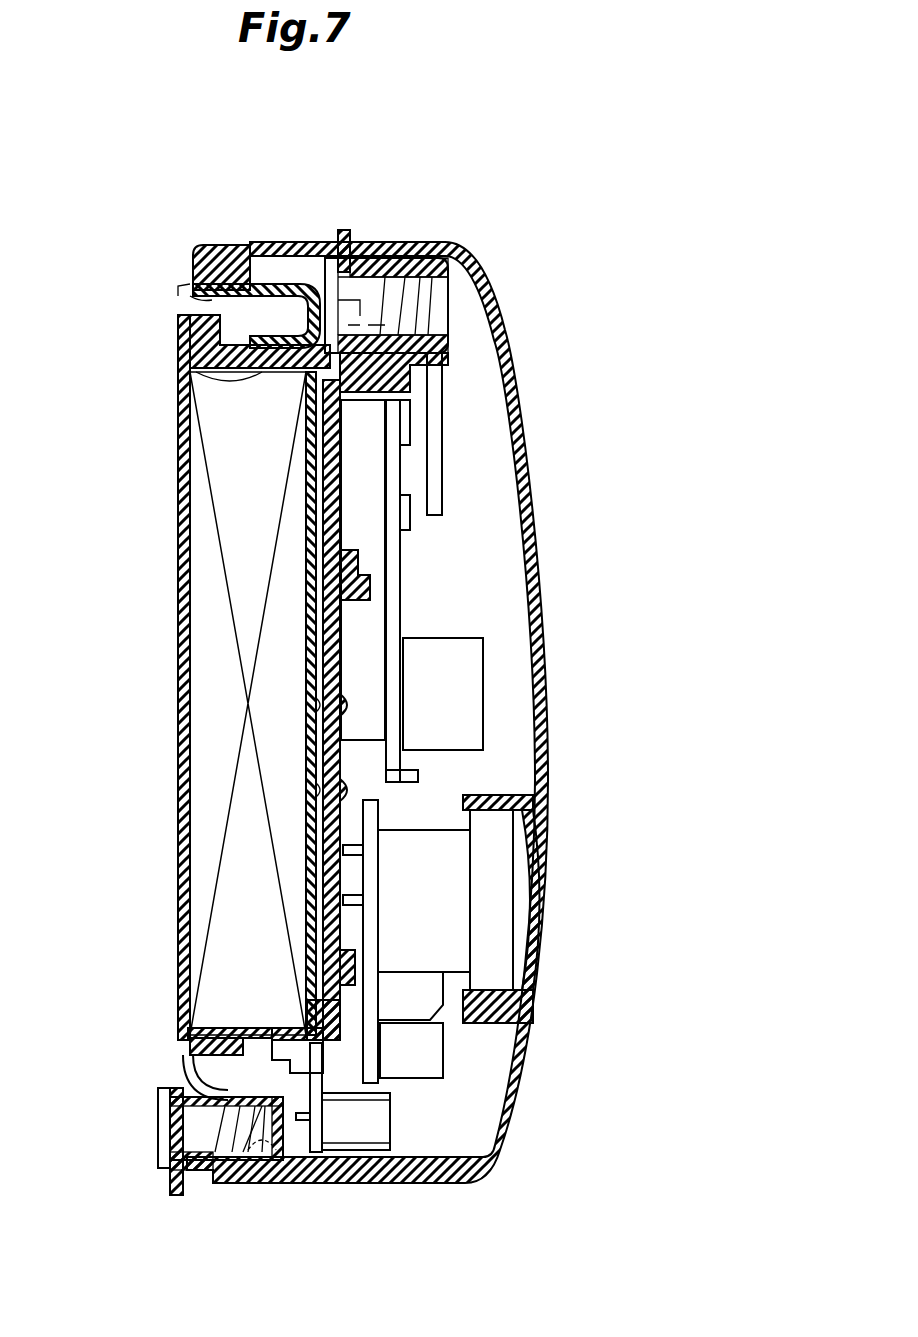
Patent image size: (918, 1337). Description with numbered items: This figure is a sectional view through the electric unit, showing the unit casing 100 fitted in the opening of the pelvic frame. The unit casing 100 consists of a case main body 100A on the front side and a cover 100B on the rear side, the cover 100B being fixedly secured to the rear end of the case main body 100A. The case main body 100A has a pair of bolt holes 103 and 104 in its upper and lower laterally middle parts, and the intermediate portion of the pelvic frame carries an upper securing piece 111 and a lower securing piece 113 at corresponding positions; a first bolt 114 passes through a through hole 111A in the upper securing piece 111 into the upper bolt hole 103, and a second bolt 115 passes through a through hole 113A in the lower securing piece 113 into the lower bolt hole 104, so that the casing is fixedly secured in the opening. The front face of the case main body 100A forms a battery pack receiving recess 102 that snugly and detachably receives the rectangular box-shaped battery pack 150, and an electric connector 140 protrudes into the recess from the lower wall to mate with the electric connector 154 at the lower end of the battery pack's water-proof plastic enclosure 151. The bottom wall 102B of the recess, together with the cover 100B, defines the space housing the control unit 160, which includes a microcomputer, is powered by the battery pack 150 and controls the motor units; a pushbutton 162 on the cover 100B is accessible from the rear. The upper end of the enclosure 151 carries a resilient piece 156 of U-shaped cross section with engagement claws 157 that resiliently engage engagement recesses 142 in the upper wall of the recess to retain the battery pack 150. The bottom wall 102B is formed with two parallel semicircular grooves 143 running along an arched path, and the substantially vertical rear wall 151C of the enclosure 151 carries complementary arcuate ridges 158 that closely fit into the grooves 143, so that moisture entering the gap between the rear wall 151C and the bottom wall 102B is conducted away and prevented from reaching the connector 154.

The unit casing 100 is at (392, 761).
The case main body 100A is at (338, 1182).
The cover 100B is at (506, 336).
The battery pack receiving recess 102 is at (262, 375).
The bottom wall 102B is at (320, 455).
The upper bolt hole 103 is at (450, 286).
The lower bolt hole 104 is at (257, 1148).
The upper securing piece 111 is at (340, 230).
The through hole 111A is at (350, 318).
The lower securing piece 113 is at (159, 1132).
The through hole 113A is at (217, 1150).
The first bolt 114 is at (266, 277).
The second bolt 115 is at (198, 1175).
The electric connector 140 is at (272, 1067).
The engagement recess 142 is at (200, 300).
The groove 143 is at (330, 706).
The battery pack 150 is at (205, 701).
The enclosure 151 is at (180, 670).
The rear wall 151C is at (340, 630).
The electric connector 154 is at (284, 1028).
The resilient piece 156 is at (272, 290).
The engagement claw 157 is at (203, 253).
The arcuate ridge 158 is at (346, 705).
The control unit 160 is at (488, 712).
The pushbutton 162 is at (512, 920).